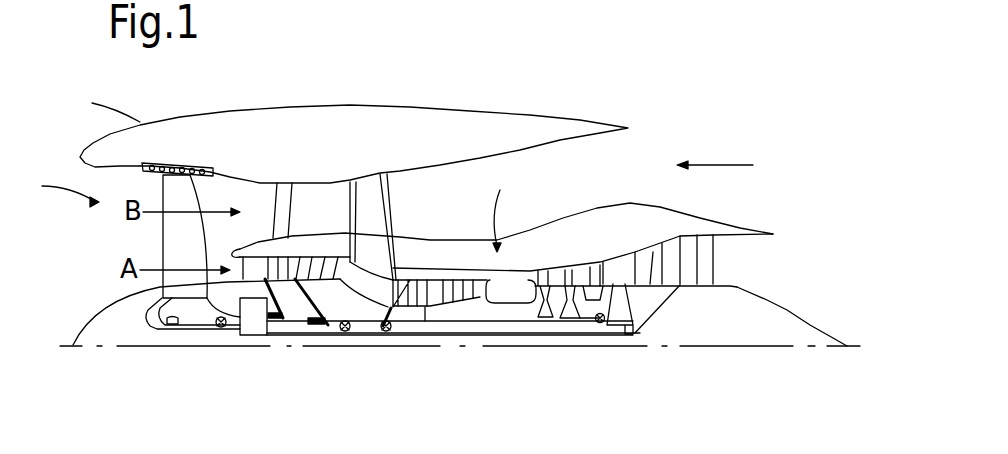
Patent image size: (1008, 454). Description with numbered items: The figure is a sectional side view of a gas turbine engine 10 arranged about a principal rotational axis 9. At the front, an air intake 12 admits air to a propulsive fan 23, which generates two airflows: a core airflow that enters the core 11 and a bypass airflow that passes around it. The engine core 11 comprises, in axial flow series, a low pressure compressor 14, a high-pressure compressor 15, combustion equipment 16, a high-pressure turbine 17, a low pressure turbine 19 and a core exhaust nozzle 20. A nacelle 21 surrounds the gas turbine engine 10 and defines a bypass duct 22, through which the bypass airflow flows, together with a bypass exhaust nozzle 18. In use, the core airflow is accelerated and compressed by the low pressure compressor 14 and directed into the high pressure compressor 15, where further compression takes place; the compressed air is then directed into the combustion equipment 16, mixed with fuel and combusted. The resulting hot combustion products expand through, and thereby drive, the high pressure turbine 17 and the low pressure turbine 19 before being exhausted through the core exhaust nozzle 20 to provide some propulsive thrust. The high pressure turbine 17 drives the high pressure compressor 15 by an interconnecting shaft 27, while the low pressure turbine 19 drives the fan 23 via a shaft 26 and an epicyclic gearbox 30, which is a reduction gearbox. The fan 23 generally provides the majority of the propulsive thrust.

The principal rotational axis 9 is at (680, 346).
The gas turbine engine 10 is at (102, 103).
The core 11 is at (509, 208).
The air intake 12 is at (56, 190).
The low pressure compressor 14 is at (315, 257).
The high-pressure compressor 15 is at (442, 280).
The combustion equipment 16 is at (520, 290).
The high-pressure turbine 17 is at (568, 264).
The bypass exhaust nozzle 18 is at (729, 166).
The low pressure turbine 19 is at (688, 247).
The core exhaust nozzle 20 is at (750, 267).
The nacelle 21 is at (376, 122).
The bypass duct 22 is at (608, 181).
The propulsive fan 23 is at (163, 240).
The shaft 26 is at (440, 334).
The interconnecting shaft 27 is at (477, 323).
The epicyclic gearbox 30 is at (255, 337).